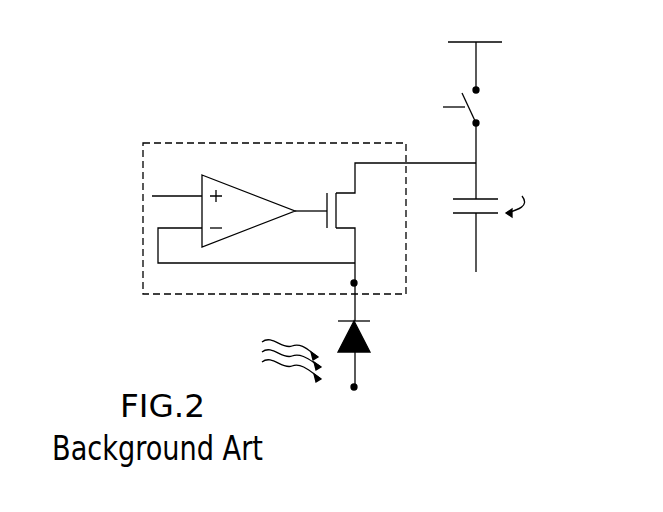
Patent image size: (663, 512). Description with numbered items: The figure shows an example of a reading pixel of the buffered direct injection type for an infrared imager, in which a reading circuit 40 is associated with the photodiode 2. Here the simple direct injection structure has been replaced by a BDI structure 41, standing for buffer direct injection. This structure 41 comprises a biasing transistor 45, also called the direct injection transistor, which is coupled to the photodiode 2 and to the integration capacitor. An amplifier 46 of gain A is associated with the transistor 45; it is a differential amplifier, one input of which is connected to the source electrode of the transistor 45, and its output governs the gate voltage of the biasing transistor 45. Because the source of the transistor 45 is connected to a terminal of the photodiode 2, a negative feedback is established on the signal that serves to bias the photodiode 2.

The photodiode 2 is at (370, 338).
The reading circuit 40 is at (117, 298).
The BDI structure 41 is at (189, 141).
The biasing transistor 45 is at (335, 174).
The amplifier 46 is at (249, 186).